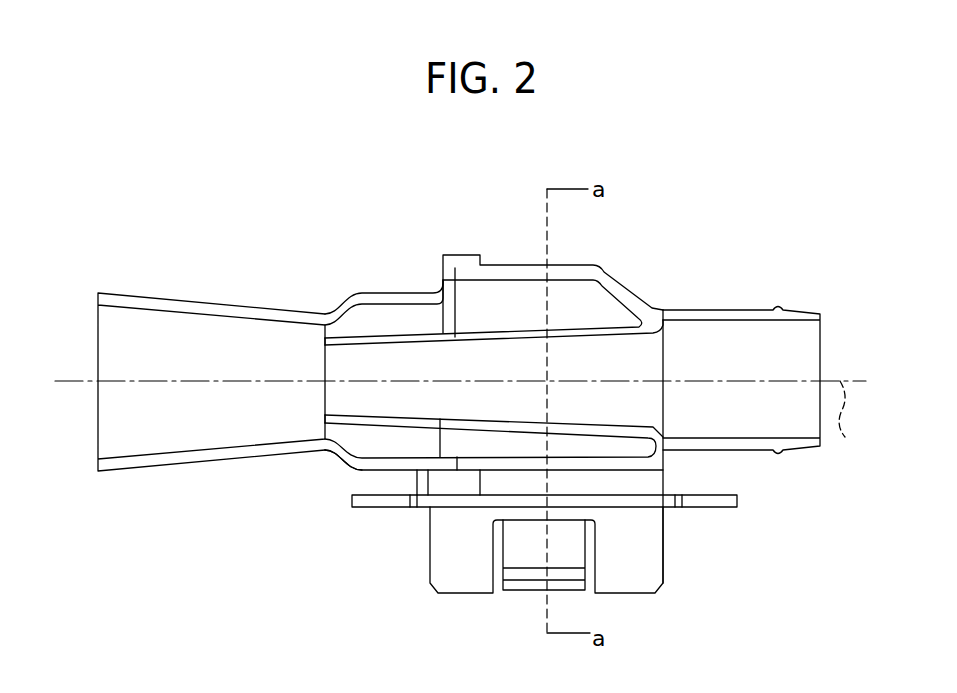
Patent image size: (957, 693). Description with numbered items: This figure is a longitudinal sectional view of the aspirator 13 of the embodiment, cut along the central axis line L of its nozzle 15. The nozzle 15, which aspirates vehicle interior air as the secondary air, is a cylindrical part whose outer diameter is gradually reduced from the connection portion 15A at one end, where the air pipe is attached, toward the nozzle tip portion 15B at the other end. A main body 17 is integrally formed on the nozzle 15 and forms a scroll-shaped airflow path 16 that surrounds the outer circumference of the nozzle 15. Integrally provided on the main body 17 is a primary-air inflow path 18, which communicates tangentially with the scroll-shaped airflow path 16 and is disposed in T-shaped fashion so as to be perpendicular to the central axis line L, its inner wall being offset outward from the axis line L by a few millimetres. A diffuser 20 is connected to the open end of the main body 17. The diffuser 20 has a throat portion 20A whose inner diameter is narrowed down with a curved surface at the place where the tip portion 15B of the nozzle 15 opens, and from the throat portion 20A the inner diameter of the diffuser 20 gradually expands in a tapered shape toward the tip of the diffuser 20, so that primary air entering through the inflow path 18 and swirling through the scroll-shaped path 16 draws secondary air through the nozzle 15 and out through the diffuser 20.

The nozzle unit 13 is at (402, 226).
The nozzle 15 is at (600, 318).
The connection portion 15A is at (788, 310).
The nozzle tip portion 15B is at (338, 348).
The scroll-shaped airflow path 16 is at (513, 297).
The main body 17 is at (518, 465).
The primary-air inflow path 18 is at (663, 545).
The diffuser 20 is at (145, 297).
The throat portion 20A is at (328, 452).
The central axis line L is at (843, 428).